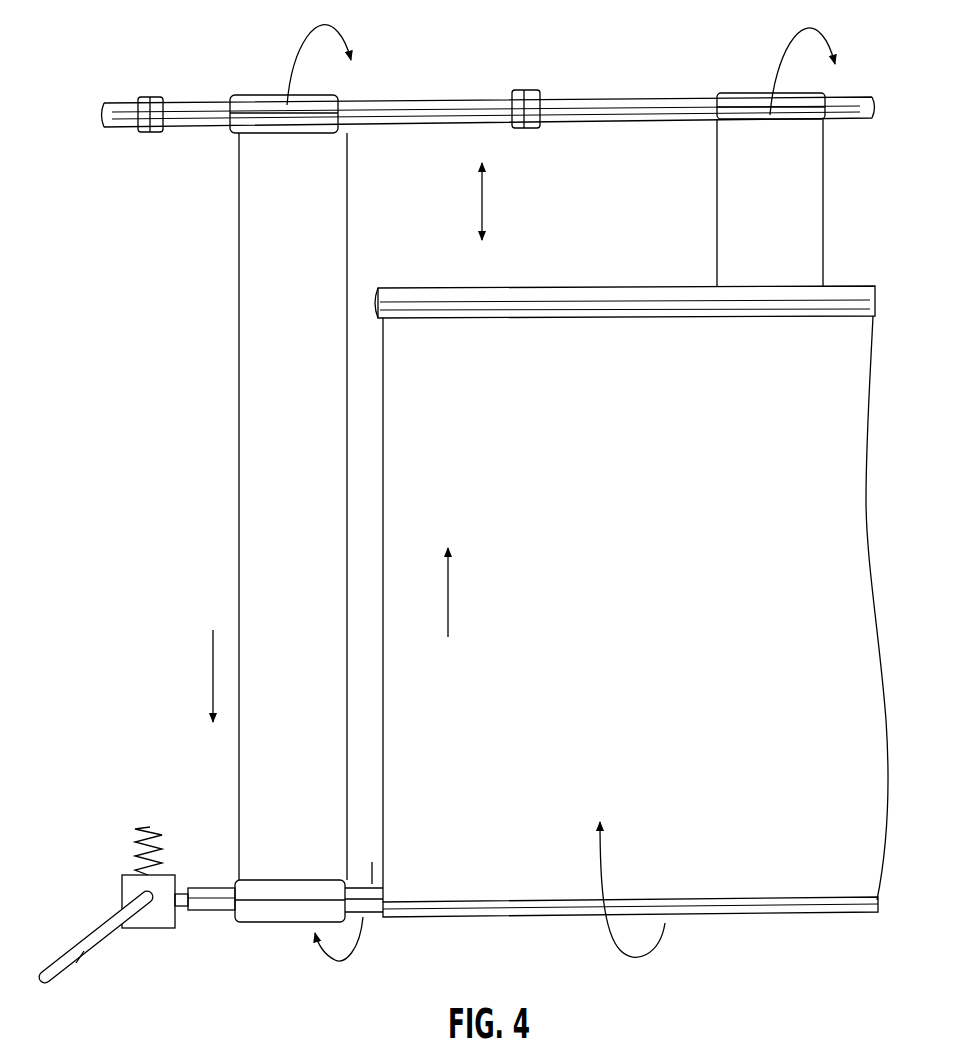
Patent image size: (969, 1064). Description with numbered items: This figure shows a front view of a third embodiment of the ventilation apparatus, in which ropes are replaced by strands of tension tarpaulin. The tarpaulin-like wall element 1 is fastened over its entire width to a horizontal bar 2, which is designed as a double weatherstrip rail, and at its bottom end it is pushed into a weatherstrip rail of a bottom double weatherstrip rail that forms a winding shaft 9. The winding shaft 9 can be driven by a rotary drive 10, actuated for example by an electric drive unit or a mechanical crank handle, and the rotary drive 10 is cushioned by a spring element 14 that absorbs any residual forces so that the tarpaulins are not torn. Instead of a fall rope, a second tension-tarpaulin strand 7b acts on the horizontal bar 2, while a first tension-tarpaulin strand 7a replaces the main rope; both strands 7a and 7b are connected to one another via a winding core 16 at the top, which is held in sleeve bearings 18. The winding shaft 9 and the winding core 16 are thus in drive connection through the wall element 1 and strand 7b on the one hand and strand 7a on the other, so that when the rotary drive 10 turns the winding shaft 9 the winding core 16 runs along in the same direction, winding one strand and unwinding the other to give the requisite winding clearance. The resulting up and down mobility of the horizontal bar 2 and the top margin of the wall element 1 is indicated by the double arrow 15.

The tarpaulin-like wall element 1 is at (848, 497).
The horizontal bar 2 is at (590, 318).
The first tension-tarpaulin strand 7a is at (255, 420).
The second tension-tarpaulin strand 7b is at (717, 200).
The winding shaft 9 is at (210, 892).
The rotary drive 10 is at (168, 920).
The spring element 14 is at (142, 827).
The double arrow 15 is at (480, 208).
The winding core 16 is at (645, 100).
The sleeve bearings 18 is at (148, 97).